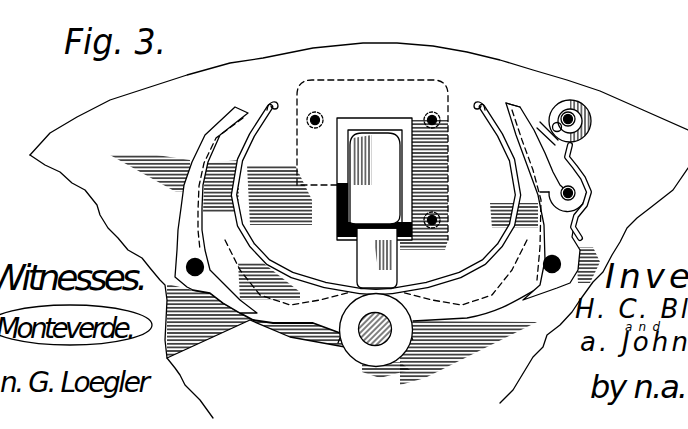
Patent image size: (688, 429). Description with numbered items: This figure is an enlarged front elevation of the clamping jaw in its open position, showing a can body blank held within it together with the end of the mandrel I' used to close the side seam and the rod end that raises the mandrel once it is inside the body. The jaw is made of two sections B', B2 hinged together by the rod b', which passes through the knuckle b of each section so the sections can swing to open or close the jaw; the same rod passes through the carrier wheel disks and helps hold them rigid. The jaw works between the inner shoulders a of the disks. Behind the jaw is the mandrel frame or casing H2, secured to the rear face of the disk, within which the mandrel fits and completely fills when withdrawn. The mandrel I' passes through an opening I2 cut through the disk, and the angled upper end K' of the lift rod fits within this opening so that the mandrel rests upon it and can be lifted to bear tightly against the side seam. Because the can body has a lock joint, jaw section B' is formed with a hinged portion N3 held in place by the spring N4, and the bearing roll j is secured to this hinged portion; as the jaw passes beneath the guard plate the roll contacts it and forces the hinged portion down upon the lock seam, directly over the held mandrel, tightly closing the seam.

The inner shoulders a is at (197, 341).
The knuckle b is at (376, 355).
The rod b' is at (359, 357).
The jaw section B' is at (543, 210).
The jaw section B2 is at (180, 211).
The ring H is at (513, 145).
The mandrel frame or casing H2 is at (370, 122).
The mandrel I' is at (375, 179).
The opening I2 is at (341, 199).
The bearing roll j is at (584, 135).
The upper end of lift rod K' is at (359, 258).
The hinged portion N3 is at (517, 108).
The spring N4 is at (590, 178).